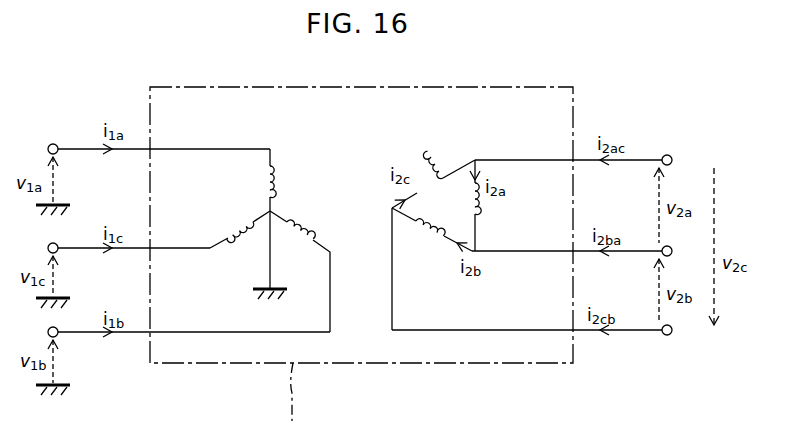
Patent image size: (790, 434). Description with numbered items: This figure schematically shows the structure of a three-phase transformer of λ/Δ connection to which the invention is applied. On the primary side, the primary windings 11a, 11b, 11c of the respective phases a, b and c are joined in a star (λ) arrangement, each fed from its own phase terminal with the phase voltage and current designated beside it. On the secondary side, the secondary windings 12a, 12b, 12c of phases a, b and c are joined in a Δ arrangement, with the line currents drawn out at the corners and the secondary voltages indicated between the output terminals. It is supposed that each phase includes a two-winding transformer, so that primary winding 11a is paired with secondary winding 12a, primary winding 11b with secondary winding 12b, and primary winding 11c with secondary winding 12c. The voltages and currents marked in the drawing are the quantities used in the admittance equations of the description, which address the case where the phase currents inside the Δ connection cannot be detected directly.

The primary winding 11a is at (275, 180).
The primary winding 11b is at (302, 228).
The primary winding 11c is at (238, 227).
The secondary winding 12a is at (481, 199).
The secondary winding 12b is at (432, 241).
The secondary winding 12c is at (425, 179).